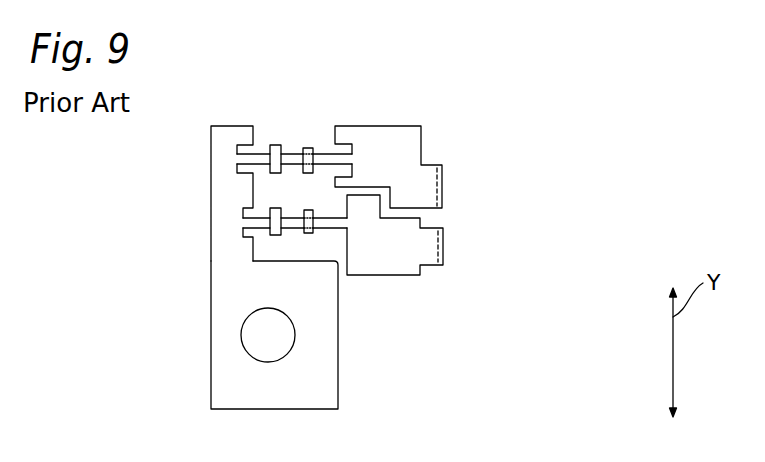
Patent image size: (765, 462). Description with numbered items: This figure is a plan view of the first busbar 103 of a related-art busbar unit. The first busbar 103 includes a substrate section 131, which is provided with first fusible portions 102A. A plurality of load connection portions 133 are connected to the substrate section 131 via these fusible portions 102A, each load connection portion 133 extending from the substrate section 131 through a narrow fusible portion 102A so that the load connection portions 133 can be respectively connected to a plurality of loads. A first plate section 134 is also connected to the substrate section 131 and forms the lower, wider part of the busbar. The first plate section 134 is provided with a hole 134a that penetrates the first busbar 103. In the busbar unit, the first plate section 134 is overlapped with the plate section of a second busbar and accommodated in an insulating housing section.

The first busbar 103 is at (555, 140).
The substrate section 131 is at (220, 193).
The first fusible portion 102A is at (295, 153).
The load connection portion 133 is at (410, 145).
The first plate section 134 is at (322, 361).
The hole 134a is at (279, 316).